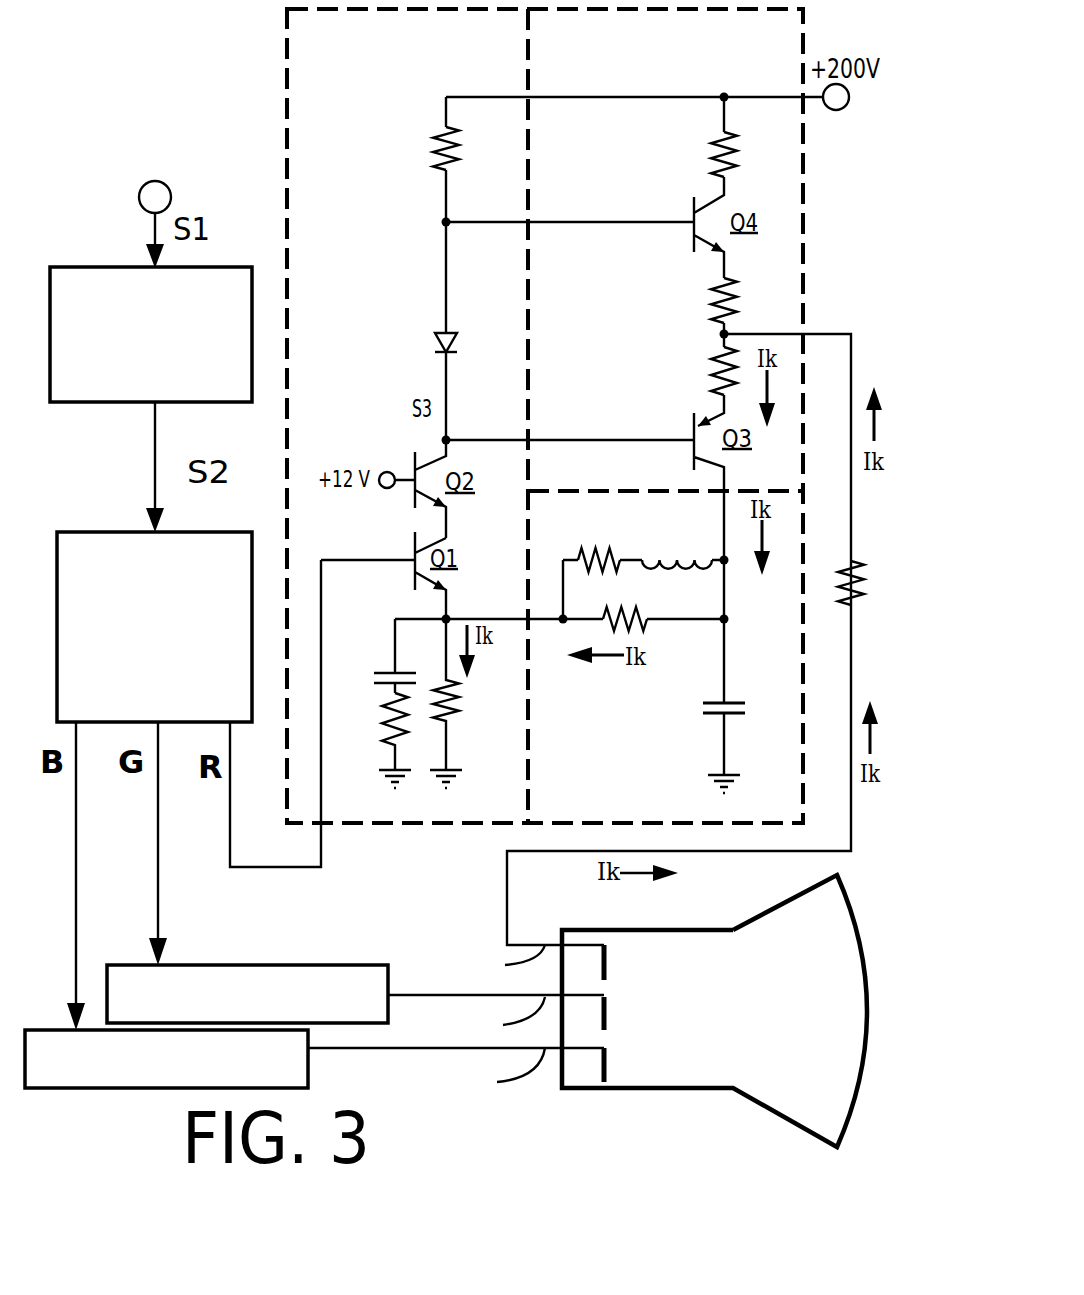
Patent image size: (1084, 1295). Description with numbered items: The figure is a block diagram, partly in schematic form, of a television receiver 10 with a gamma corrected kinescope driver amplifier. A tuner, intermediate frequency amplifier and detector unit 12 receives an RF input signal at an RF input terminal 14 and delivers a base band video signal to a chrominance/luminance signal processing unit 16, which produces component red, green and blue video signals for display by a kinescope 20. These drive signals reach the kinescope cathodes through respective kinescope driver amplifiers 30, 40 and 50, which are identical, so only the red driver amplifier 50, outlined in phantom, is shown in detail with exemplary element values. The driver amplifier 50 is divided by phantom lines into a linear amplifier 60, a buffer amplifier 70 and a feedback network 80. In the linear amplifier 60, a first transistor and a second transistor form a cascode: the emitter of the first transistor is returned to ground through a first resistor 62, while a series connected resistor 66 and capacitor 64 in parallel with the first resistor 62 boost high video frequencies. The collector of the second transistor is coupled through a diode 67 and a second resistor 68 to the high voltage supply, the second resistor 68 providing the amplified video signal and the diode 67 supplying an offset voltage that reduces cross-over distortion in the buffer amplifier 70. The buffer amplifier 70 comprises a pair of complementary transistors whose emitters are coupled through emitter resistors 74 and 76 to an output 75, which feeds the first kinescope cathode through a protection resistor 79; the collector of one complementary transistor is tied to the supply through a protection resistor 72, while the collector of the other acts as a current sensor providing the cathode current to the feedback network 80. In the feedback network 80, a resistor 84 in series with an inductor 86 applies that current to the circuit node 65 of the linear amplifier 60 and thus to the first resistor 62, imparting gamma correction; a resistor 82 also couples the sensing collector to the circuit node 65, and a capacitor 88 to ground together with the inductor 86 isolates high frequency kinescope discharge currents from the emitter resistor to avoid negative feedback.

The television receiver 10 is at (133, 33).
The tuner, intermediate frequency amplifier and detector unit 12 is at (113, 265).
The RF input terminal 14 is at (143, 180).
The chrominance/luminance signal processing unit 16 is at (130, 530).
The kinescope 20 is at (708, 1095).
The kinescope driver amplifier 30 is at (138, 1090).
The kinescope driver amplifier 40 is at (230, 965).
The driver amplifier 50 is at (282, 90).
The linear amplifier 60 is at (477, 68).
The first resistor 62 is at (455, 713).
The capacitor 64 is at (372, 675).
The circuit node 65 is at (450, 613).
The resistor 66 is at (382, 722).
The diode 67 is at (428, 343).
The second resistor 68 is at (432, 160).
The buffer amplifier 70 is at (722, 65).
The protection resistor 72 is at (712, 157).
The emitter resistor 74 is at (710, 300).
The output 75 is at (720, 334).
The emitter resistor 76 is at (712, 372).
The protection resistor 79 is at (860, 590).
The feedback network 80 is at (614, 777).
The resistor 82 is at (638, 613).
The resistor 84 is at (608, 547).
The inductor 86 is at (695, 553).
The capacitor 88 is at (730, 690).